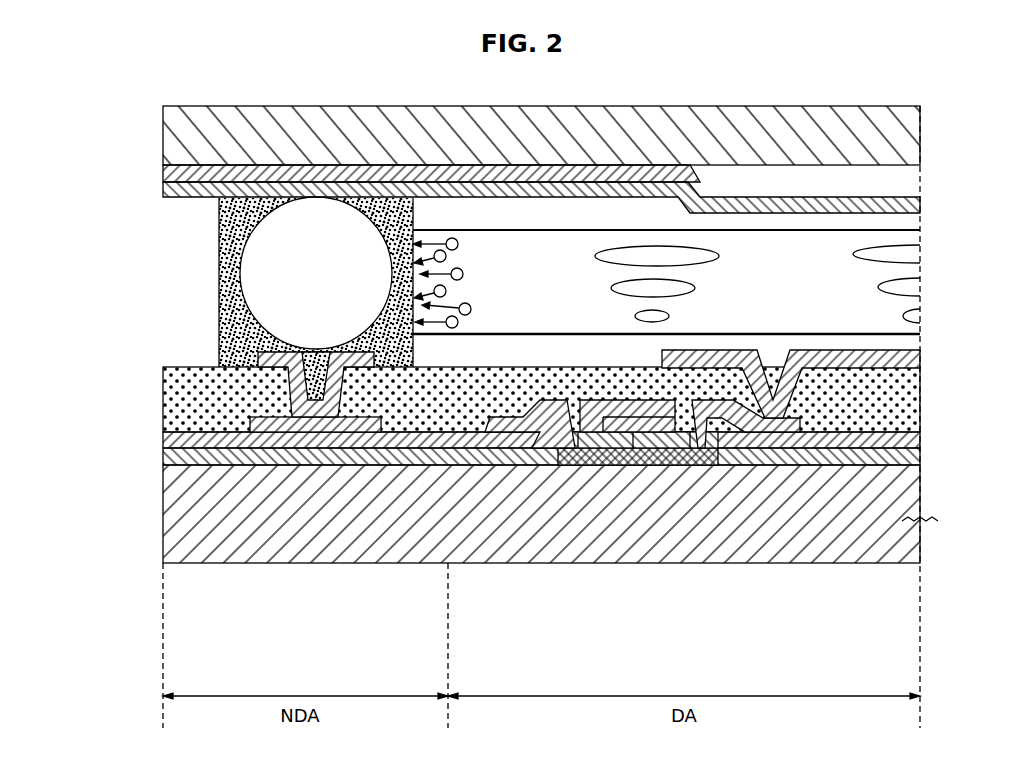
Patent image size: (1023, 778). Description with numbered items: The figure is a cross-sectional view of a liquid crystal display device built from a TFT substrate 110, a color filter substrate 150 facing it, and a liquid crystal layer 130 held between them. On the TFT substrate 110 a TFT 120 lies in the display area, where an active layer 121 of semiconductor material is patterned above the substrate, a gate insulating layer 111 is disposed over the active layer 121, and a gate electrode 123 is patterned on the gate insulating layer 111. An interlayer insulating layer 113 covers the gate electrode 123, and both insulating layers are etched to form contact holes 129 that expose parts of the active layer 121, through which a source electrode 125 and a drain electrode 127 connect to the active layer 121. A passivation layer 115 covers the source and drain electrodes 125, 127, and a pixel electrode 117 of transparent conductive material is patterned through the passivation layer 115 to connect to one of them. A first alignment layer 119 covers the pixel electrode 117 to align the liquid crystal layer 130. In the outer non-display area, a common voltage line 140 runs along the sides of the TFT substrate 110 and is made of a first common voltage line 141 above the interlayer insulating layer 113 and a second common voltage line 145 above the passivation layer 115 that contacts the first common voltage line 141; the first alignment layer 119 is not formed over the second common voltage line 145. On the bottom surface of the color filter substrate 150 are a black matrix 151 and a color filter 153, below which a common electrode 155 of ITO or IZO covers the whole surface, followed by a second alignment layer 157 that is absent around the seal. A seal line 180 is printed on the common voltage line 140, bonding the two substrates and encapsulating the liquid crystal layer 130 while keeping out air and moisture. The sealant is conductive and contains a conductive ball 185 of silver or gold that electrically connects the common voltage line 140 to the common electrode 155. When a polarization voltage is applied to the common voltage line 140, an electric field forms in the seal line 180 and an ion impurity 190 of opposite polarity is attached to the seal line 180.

The TFT substrate 110 is at (172, 515).
The gate insulating layer 111 is at (912, 457).
The interlayer insulating layer 113 is at (912, 439).
The passivation layer 115 is at (912, 401).
The pixel electrode 117 is at (912, 360).
The first alignment layer 119 is at (912, 338).
The TFT 120 is at (642, 538).
The active layer 121 is at (673, 458).
The gate electrode 123 is at (632, 425).
The source electrode 125 is at (511, 430).
The drain electrode 127 is at (746, 514).
The contact holes 129 is at (562, 447).
The liquid crystal layer 130 is at (912, 276).
The common voltage line 140 is at (208, 392).
The first common voltage line 141 is at (250, 425).
The second common voltage line 145 is at (260, 357).
The color filter substrate 150 is at (172, 144).
The black matrix 151 is at (172, 172).
The color filter 153 is at (912, 182).
The common electrode 155 is at (172, 194).
The second alignment layer 157 is at (912, 226).
The seal line 180 is at (232, 248).
The conductive ball 185 is at (262, 300).
The ion impurity 190 is at (463, 274).